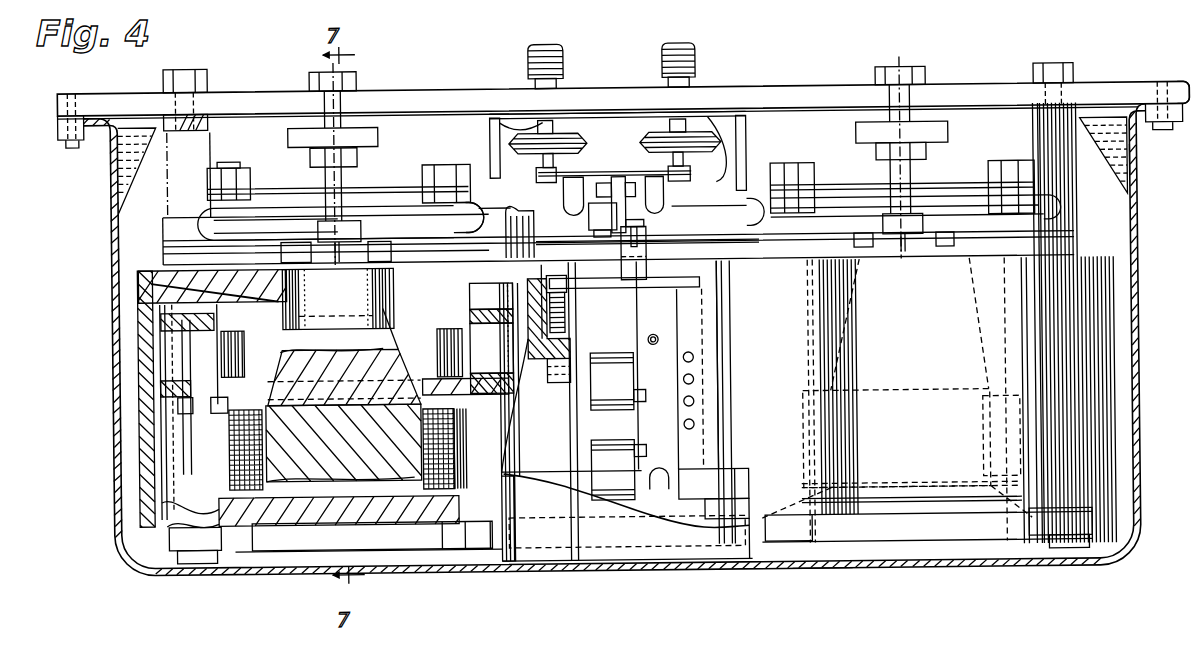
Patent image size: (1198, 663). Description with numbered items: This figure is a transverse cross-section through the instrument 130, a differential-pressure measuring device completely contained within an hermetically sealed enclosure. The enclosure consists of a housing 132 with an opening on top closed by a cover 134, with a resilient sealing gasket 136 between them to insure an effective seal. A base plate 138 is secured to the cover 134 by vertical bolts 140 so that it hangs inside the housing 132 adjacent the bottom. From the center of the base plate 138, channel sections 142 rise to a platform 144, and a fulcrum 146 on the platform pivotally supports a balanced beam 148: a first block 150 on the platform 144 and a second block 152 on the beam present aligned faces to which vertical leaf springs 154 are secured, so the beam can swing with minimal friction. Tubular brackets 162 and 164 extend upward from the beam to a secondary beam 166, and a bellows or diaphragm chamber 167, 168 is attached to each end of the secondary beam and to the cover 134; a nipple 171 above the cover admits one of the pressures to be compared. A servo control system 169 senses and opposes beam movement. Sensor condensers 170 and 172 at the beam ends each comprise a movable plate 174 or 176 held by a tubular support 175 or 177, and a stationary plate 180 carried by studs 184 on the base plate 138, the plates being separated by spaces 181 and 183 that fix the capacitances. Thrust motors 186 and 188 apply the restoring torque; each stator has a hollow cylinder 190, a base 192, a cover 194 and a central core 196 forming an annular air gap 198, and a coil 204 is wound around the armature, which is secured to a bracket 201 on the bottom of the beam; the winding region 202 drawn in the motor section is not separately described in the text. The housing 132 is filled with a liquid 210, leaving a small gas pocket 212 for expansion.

The instrument 130 is at (1143, 404).
The housing 132 is at (816, 567).
The cover 134 is at (420, 100).
The resilient sealing gasket 136 is at (1190, 94).
The base plate 138 is at (412, 556).
The vertical bolts 140 is at (186, 68).
The channel sections 142 is at (583, 298).
The platform 144 is at (610, 283).
The fulcrum 146 is at (657, 266).
The balanced beam 148 is at (710, 206).
The first block 150 is at (617, 240).
The second block 152 is at (590, 220).
The vertical leaf springs 154 is at (628, 212).
The tubular bracket 162 is at (572, 190).
The tubular bracket 164 is at (657, 166).
The secondary beam 166 is at (595, 172).
The bellows or diaphragm chamber 167 is at (578, 141).
The bellows or diaphragm chamber 168 is at (707, 120).
The servo control system 169 is at (601, 430).
The sensor condenser 170 is at (332, 190).
The nipple 171 is at (566, 67).
The sensor condenser 172 is at (700, 67).
The movable plate 174 is at (302, 208).
The support 175 is at (468, 216).
The movable plate 176 is at (938, 198).
The support 177 is at (850, 212).
The stationary plate 180 is at (345, 220).
The space 181 is at (438, 190).
The space 183 is at (864, 194).
The studs 184 is at (288, 147).
The thrust motor 186 is at (172, 447).
The thrust motor 188 is at (1044, 346).
The hollow cylinder 190 is at (140, 366).
The base 192 is at (287, 518).
The cover 194 is at (172, 270).
The central core 196 is at (383, 372).
The air gap 198 is at (388, 348).
The bracket 201 is at (338, 264).
The coil windings 202 is at (282, 489).
The coil 204 is at (276, 312).
The liquid 210 is at (1124, 160).
The gas pocket 212 is at (1085, 198).